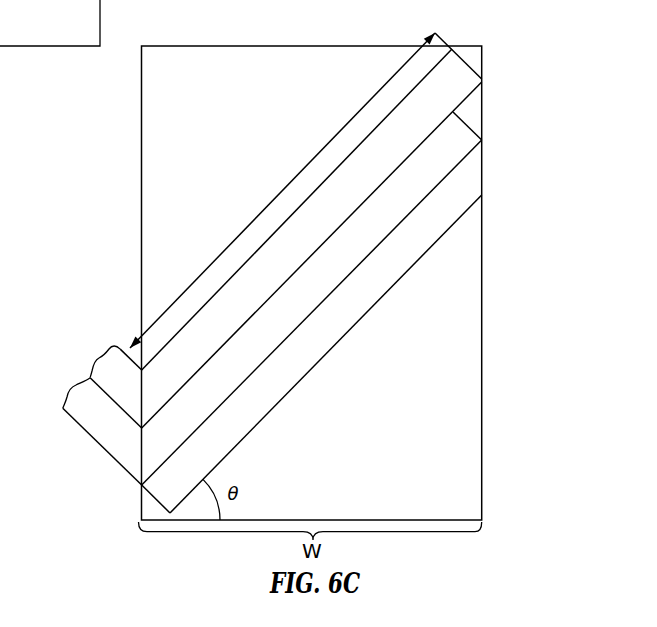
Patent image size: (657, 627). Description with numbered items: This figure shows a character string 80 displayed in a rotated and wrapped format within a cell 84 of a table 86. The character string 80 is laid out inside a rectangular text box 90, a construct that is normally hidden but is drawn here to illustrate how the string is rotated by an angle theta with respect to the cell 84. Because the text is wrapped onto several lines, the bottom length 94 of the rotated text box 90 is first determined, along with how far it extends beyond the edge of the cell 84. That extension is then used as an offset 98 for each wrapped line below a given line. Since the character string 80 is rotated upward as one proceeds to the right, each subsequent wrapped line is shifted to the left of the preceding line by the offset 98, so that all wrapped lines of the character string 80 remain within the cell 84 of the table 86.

The character string 80 is at (315, 273).
The cell 84 is at (187, 128).
The table 86 is at (284, 29).
The text box 90 is at (384, 293).
The bottom length 94 is at (328, 142).
The offset 98 is at (98, 358).